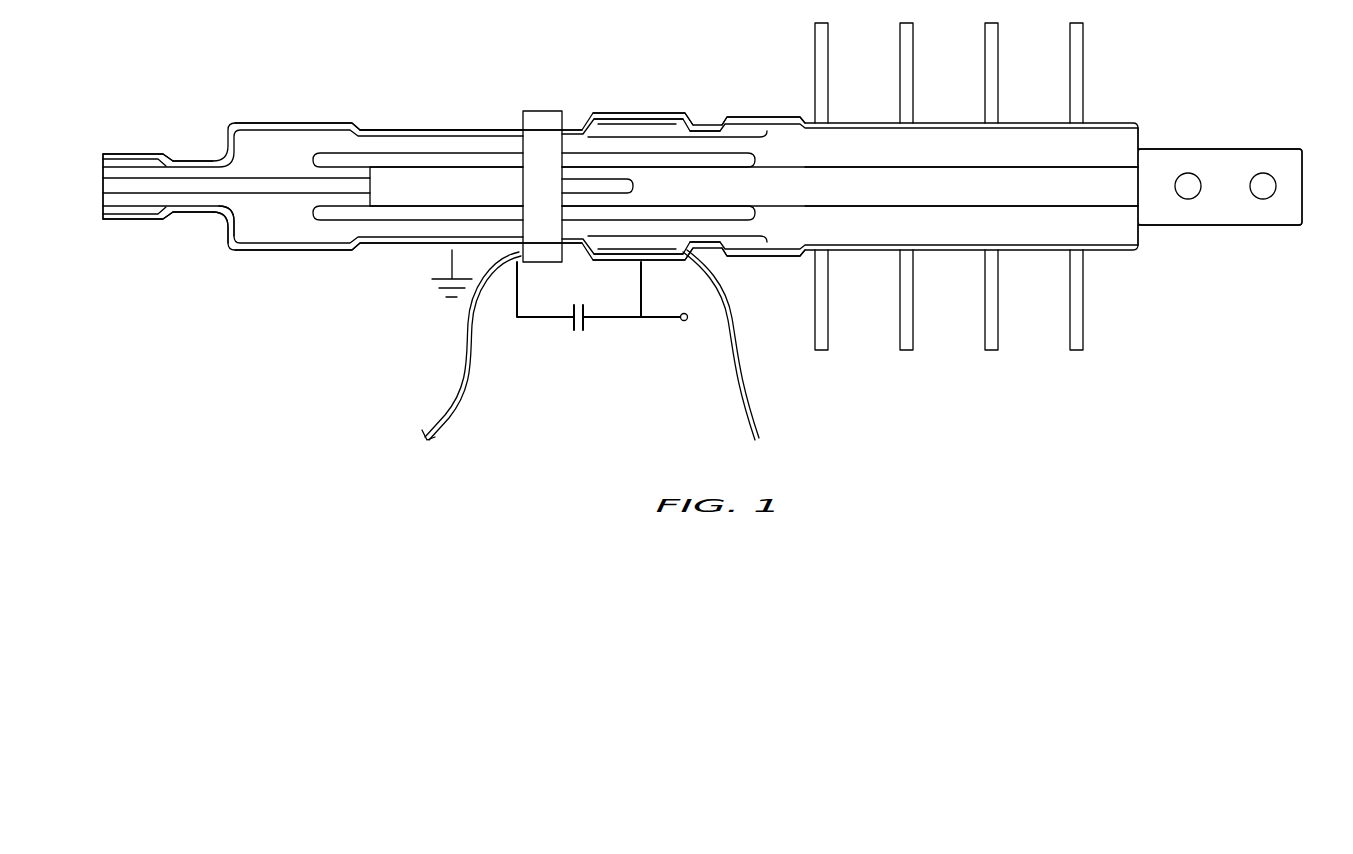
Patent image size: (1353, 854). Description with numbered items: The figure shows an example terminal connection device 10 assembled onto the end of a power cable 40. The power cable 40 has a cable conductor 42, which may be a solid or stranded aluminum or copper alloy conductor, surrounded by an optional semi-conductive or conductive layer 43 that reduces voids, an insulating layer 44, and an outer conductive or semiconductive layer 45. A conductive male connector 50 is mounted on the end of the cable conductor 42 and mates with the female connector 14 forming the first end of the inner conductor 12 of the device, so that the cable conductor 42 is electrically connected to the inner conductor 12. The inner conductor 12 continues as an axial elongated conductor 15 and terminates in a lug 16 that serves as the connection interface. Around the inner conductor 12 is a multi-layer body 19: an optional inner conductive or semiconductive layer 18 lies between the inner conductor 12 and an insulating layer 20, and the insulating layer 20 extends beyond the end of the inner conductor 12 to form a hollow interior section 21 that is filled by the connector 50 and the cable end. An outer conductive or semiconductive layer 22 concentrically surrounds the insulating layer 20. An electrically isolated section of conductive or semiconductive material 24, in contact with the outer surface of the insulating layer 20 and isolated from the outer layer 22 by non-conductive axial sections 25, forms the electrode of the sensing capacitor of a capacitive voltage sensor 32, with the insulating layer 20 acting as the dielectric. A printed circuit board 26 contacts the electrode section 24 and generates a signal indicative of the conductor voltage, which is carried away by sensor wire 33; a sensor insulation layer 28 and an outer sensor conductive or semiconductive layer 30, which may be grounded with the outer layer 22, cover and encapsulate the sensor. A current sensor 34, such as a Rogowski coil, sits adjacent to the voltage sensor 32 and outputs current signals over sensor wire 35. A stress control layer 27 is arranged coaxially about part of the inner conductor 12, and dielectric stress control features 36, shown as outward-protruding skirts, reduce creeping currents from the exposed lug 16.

The terminal connection device 10 is at (262, 62).
The inner conductor 12 is at (1310, 148).
The female connector 14 is at (850, 186).
The axial elongated conductor 15 is at (1028, 183).
The lug 16 is at (1220, 187).
The inner conductive or semiconductive layer 18 is at (372, 160).
The multi-layer body 19 is at (473, 130).
The insulating layer 20 is at (949, 100).
The hollow interior section 21 is at (230, 185).
The outer conductive or semiconductive layer 22 is at (425, 132).
The electrically isolated section of conductive or semiconductive material 24 is at (612, 133).
The non-conductive axial sections 25 is at (690, 133).
The printed circuit board 26 is at (628, 127).
The stress control layer 27 is at (780, 128).
The sensor insulation layer 28 is at (653, 120).
The outer sensor conductive or semiconductive layer 30 is at (676, 118).
The capacitive voltage sensor 32 is at (548, 340).
The sensor wire 33 is at (748, 380).
The current sensor 34 is at (542, 186).
The sensor wire 35 is at (462, 384).
The dielectric stress control features 36 is at (828, 320).
The power cable 40 is at (92, 170).
The cable conductor 42 is at (120, 185).
The semi-conductive or conductive layer 43 is at (150, 194).
The insulating layer 44 is at (190, 177).
The outer conductive or semiconductive layer 45 is at (103, 207).
The male connector 50 is at (446, 186).